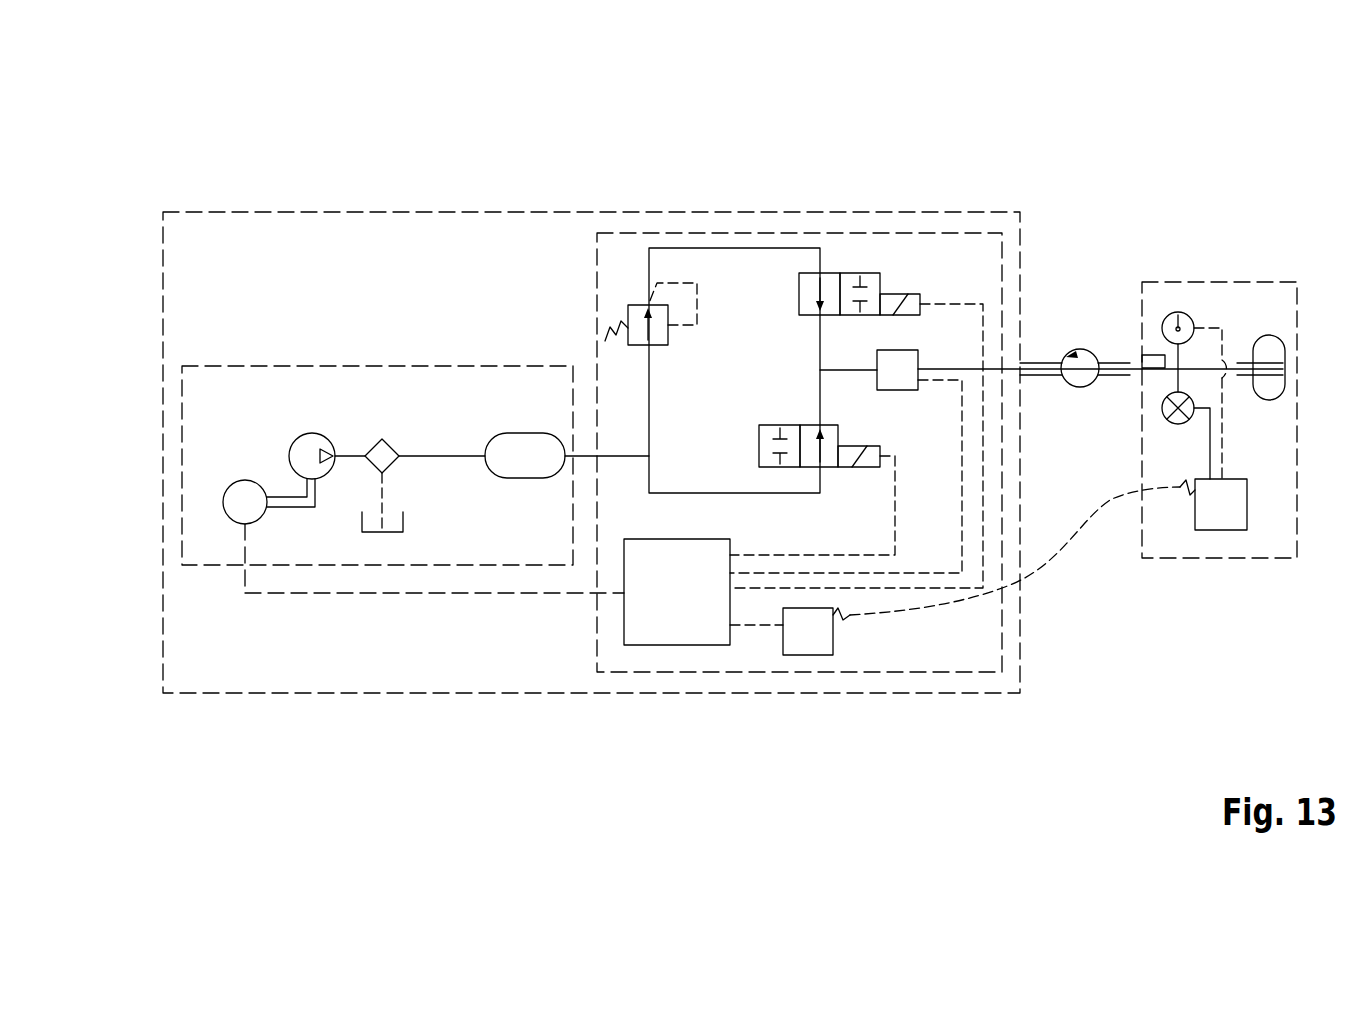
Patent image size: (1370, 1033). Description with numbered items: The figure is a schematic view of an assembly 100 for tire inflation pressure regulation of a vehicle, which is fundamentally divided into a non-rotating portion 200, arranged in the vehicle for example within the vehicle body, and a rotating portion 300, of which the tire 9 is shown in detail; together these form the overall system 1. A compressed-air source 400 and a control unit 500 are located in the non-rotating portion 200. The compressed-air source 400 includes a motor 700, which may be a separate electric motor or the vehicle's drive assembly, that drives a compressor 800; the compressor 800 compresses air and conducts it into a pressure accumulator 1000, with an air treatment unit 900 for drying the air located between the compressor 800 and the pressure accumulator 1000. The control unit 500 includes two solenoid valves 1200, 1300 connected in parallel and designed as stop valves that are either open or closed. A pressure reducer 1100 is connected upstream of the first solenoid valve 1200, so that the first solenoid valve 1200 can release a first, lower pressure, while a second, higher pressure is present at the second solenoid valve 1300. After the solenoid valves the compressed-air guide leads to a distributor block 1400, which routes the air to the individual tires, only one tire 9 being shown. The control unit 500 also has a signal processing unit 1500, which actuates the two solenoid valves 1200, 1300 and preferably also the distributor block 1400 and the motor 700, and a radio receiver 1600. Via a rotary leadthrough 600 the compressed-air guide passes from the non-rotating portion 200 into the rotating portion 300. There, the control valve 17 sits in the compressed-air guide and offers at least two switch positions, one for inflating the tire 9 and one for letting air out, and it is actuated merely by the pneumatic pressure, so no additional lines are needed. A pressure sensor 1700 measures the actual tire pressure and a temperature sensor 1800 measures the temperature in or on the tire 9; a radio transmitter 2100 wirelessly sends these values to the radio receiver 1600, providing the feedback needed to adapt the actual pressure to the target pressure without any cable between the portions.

The hydraulic system 1 is at (1215, 140).
The tire 9 is at (1277, 335).
The control valve 17 is at (1148, 380).
The assembly 100 is at (323, 142).
The non-rotating portion 200 is at (386, 212).
The rotating portion 300 is at (1223, 282).
The compressed-air source 400 is at (343, 365).
The control unit 500 is at (597, 268).
The rotary leadthrough 600 is at (1070, 353).
The motor 700 is at (232, 482).
The compressor 800 is at (298, 432).
The air treatment unit 900 is at (373, 442).
The pressure accumulator 1000 is at (520, 433).
The pressure reducer 1100 is at (668, 337).
The first solenoid valve 1200 is at (880, 282).
The second solenoid valve 1300 is at (770, 425).
The distributor block 1400 is at (918, 357).
The signal processing unit 1500 is at (670, 645).
The radio receiver 1600 is at (815, 655).
The pressure sensor 1700 is at (1166, 422).
The temperature sensor 1800 is at (1175, 313).
The radio transmitter 2100 is at (1223, 530).